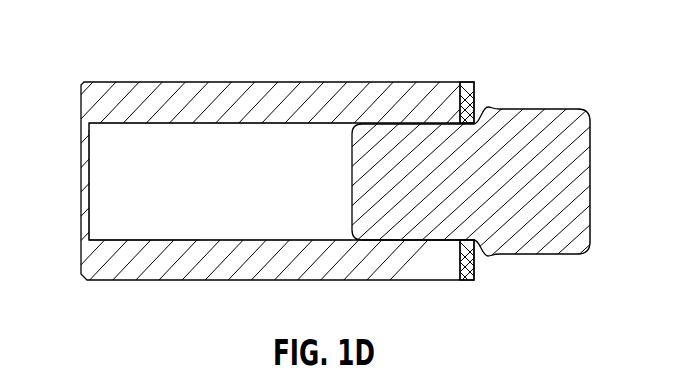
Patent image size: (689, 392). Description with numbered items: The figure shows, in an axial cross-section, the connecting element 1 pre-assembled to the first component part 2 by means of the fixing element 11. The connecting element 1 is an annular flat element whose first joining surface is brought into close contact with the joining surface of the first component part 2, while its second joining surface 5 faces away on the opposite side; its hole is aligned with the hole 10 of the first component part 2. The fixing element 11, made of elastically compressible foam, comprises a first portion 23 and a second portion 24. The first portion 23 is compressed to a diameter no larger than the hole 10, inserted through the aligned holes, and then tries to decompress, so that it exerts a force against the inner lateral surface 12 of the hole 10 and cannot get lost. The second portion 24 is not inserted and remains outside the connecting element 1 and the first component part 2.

The connecting element 1 is at (469, 82).
The first component part 2 is at (150, 90).
The second joining surface 5 is at (476, 265).
The hole 10 is at (98, 163).
The fixing element 11 is at (525, 125).
The inner lateral surface 12 is at (98, 241).
The first portion 23 is at (377, 229).
The second portion 24 is at (577, 202).